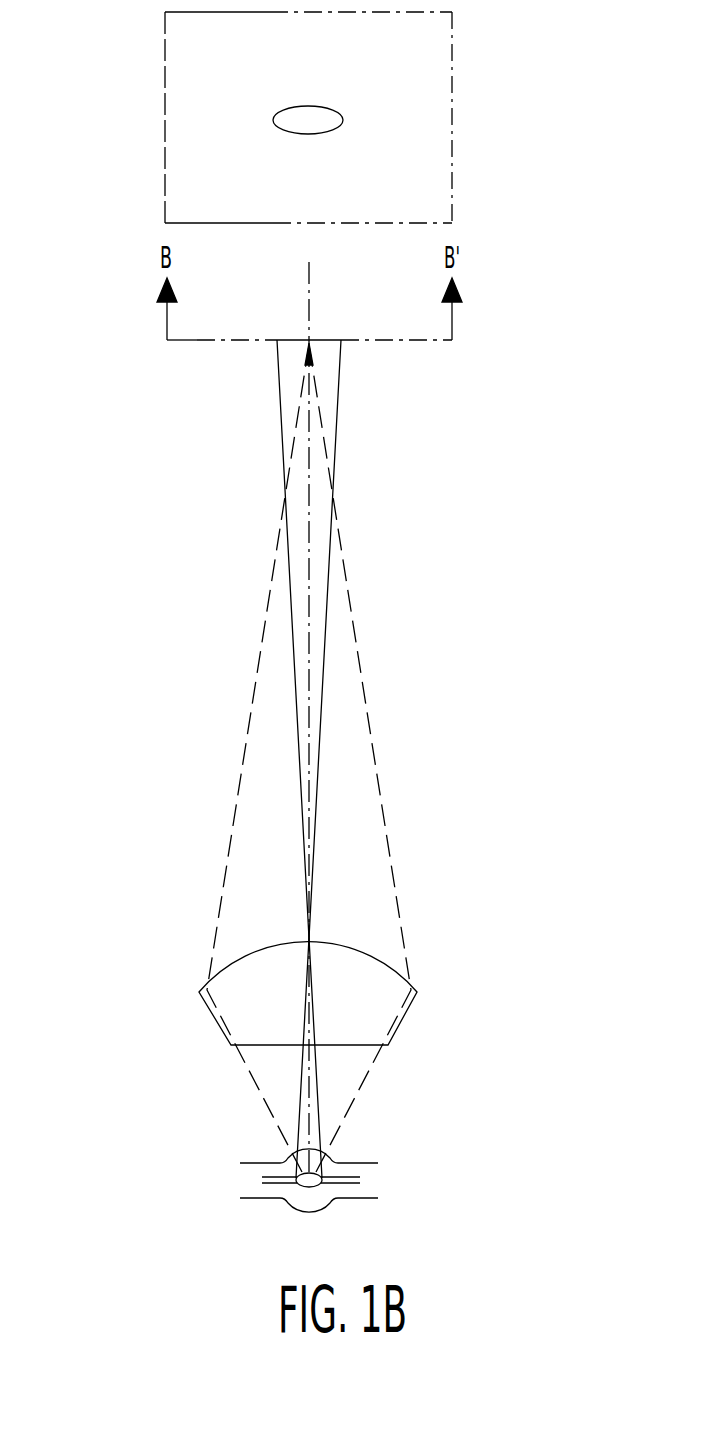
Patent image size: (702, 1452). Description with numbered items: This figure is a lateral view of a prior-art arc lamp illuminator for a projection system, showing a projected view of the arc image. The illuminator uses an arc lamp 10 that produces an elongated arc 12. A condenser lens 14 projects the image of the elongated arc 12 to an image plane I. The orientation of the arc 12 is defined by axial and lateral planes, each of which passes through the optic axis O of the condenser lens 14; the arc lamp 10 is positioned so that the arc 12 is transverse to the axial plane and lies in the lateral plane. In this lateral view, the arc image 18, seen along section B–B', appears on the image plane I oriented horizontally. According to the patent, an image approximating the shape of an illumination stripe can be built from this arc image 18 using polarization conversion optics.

The arc lamp 10 is at (385, 1194).
The elongated arc 12 is at (360, 1179).
The condenser lens 14 is at (415, 1002).
The arc image 18 is at (343, 118).
The image plane I is at (318, 342).
The optic axis O is at (302, 670).